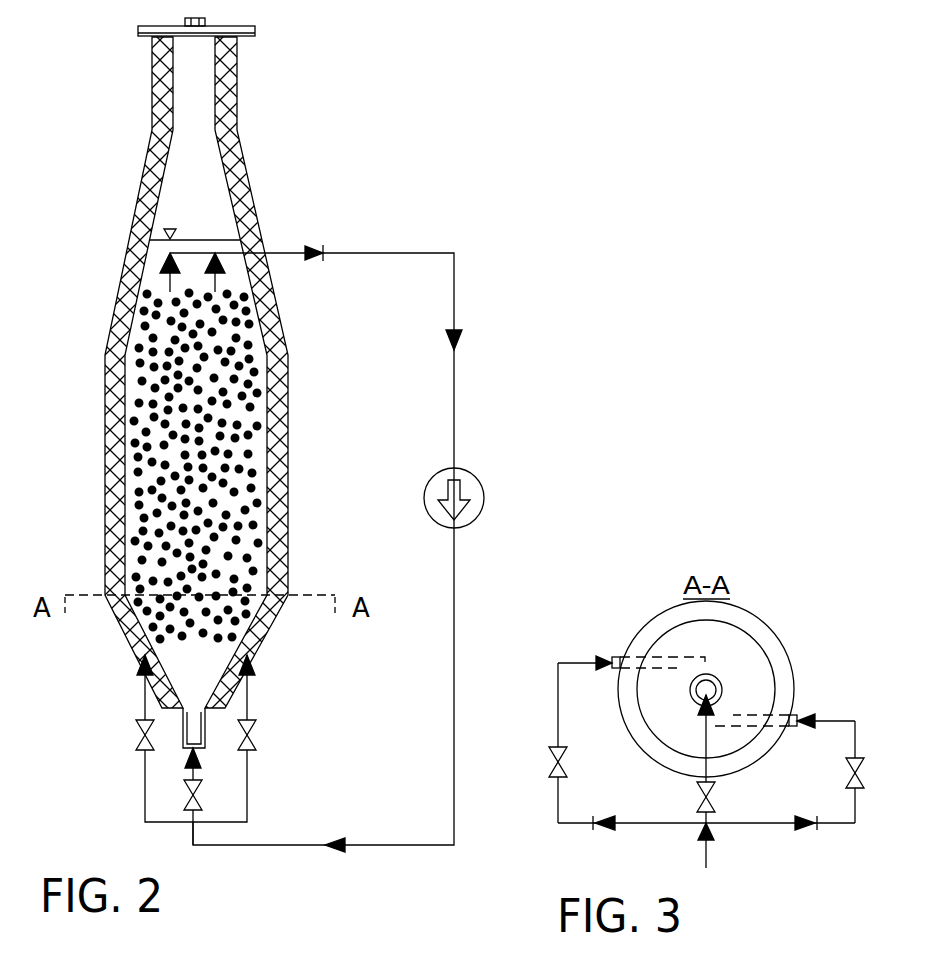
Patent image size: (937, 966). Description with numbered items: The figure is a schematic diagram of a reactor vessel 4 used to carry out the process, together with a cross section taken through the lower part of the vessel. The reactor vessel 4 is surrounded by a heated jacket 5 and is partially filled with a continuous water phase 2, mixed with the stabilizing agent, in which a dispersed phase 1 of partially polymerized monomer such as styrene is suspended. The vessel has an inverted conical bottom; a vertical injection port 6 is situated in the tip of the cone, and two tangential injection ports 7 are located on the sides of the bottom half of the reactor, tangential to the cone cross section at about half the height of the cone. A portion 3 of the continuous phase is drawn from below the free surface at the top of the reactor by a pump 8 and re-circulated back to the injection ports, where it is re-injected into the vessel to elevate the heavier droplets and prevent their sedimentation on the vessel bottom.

In FIG. 2, the dispersed phase 1 is at (246, 368).
In FIG. 2, the continuous water phase 2 is at (233, 272).
In FIG. 2, the portion of the continuous phase 3 is at (466, 422).
In FIG. 2, the reactor vessel 4 is at (250, 153).
In FIG. 2, the heated jacket 5 is at (242, 63).
In FIG. 2, the vertical injection port 6 is at (205, 796).
In FIG. 3, the vertical injection port 6 is at (706, 781).
In FIG. 2, the tangential injection ports 7 is at (191, 737).
In FIG. 3, the tangential injection ports 7 is at (706, 720).
In FIG. 2, the pump 8 is at (494, 491).